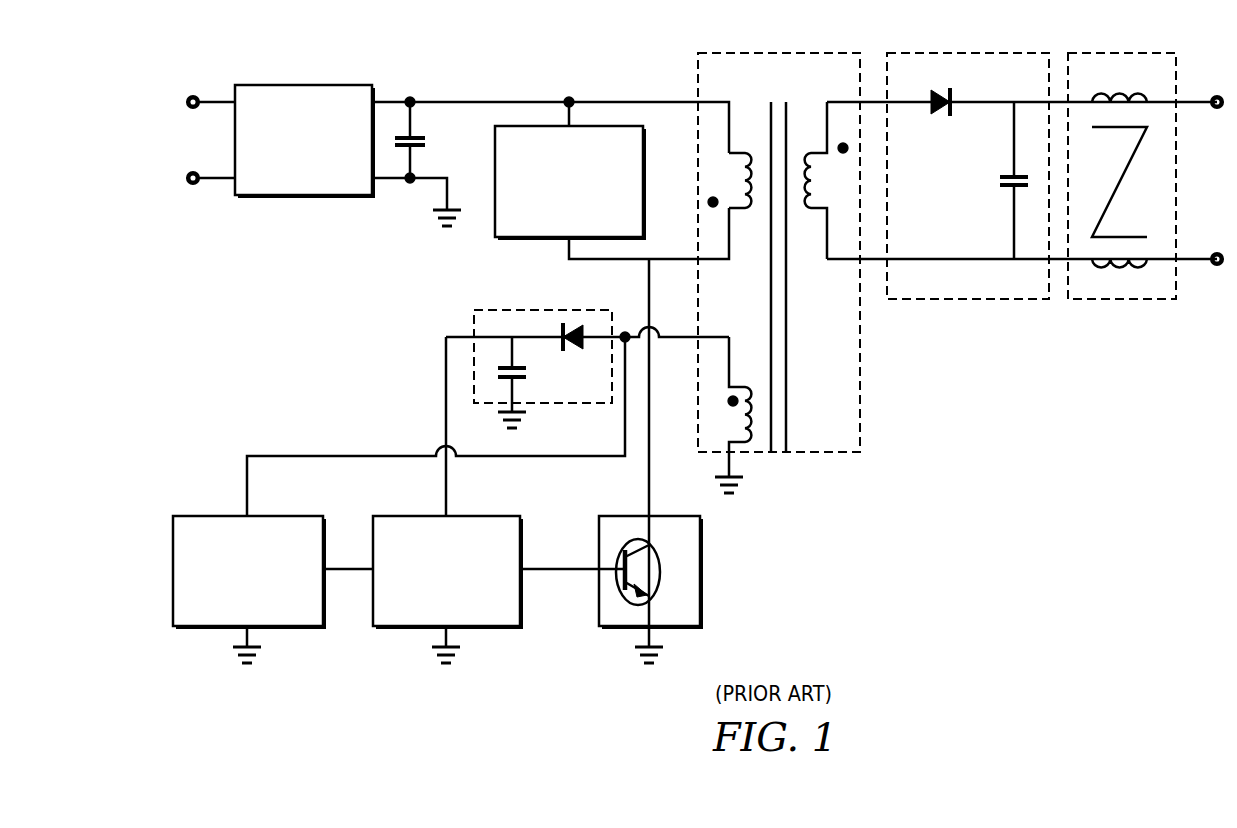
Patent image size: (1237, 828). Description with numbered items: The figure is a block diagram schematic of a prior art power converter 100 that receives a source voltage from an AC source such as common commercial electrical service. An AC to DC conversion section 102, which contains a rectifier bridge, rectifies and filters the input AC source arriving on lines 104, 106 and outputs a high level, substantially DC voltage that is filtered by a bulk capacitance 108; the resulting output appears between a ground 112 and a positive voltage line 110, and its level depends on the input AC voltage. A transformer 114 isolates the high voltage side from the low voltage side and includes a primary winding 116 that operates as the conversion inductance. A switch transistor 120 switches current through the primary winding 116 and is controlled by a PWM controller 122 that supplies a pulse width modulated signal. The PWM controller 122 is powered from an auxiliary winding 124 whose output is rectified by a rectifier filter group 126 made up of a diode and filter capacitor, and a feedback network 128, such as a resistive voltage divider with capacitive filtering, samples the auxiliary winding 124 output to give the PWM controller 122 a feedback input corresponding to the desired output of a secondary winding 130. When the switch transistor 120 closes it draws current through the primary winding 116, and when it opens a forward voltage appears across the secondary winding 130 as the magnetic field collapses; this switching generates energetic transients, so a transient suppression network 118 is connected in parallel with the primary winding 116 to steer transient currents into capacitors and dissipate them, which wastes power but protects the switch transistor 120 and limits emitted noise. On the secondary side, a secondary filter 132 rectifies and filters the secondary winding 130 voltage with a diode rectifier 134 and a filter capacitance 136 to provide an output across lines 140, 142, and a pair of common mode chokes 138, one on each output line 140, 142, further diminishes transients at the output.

The power converter 100 is at (946, 609).
The AC to DC conversion section 102 is at (356, 85).
The line 104 is at (219, 100).
The line 106 is at (219, 181).
The bulk capacitance 108 is at (422, 134).
The positive voltage line 110 is at (464, 100).
The ground 112 is at (445, 203).
The transformer 114 is at (780, 53).
The primary winding 116 is at (741, 153).
The transient suppression network 118 is at (495, 158).
The switch transistor 120 is at (617, 515).
The PWM controller 122 is at (388, 515).
The auxiliary winding 124 is at (740, 444).
The rectifier filter group 126 is at (543, 309).
The feedback network 128 is at (190, 515).
The secondary winding 130 is at (822, 208).
The secondary filter 132 is at (969, 52).
The diode rectifier 134 is at (942, 116).
The filter capacitance 136 is at (1008, 173).
The common mode chokes 138 is at (1122, 52).
The line 140 is at (1198, 98).
The line 142 is at (1195, 263).